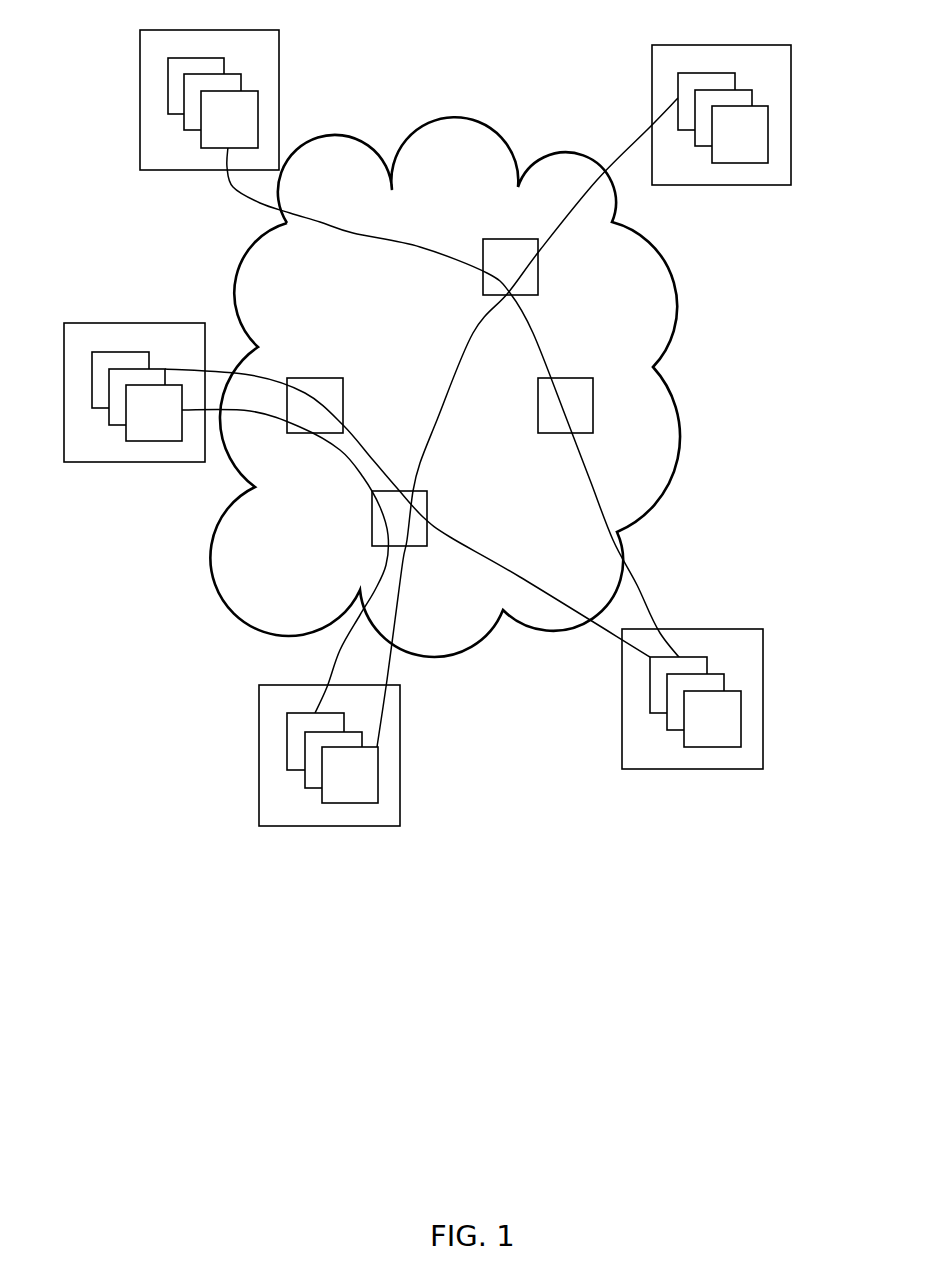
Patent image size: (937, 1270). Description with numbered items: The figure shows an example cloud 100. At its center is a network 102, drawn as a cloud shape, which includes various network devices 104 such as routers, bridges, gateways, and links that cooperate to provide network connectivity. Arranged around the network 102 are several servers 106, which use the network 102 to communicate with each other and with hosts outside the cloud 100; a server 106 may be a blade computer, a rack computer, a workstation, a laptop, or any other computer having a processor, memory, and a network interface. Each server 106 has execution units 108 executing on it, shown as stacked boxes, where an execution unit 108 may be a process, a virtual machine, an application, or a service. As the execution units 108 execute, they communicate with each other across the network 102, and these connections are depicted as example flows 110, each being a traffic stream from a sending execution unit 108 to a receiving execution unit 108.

The cloud 100 is at (430, 44).
The network 102 is at (676, 318).
The network device 104 is at (512, 239).
The server 106 is at (131, 54).
The execution unit 108 is at (185, 132).
The flow 110 is at (637, 585).